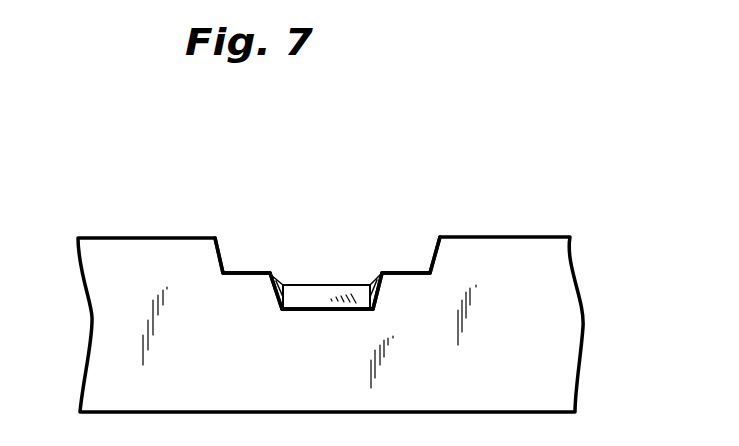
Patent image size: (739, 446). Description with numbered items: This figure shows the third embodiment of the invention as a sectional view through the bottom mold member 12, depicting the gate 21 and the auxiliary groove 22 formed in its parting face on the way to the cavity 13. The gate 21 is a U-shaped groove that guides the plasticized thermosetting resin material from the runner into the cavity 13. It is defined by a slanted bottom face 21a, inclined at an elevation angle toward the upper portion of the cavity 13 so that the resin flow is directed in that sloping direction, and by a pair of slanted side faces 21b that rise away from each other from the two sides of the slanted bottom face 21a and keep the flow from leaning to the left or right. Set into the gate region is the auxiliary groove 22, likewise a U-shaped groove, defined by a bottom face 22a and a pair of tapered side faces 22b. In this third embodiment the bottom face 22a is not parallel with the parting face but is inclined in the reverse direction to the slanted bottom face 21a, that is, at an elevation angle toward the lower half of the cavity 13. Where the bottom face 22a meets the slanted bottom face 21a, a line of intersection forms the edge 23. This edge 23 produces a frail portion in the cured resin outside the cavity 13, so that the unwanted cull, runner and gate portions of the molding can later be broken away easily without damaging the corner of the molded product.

The bottom mold member 12 is at (563, 305).
The cavity 13 is at (408, 107).
The gate 21 is at (411, 270).
The slanted bottom face 21a is at (252, 273).
The slanted side faces 21b is at (229, 260).
The auxiliary groove 22 is at (293, 251).
The bottom face 22a is at (322, 290).
The tapered side faces 22b is at (274, 276).
The edge 23 is at (339, 291).